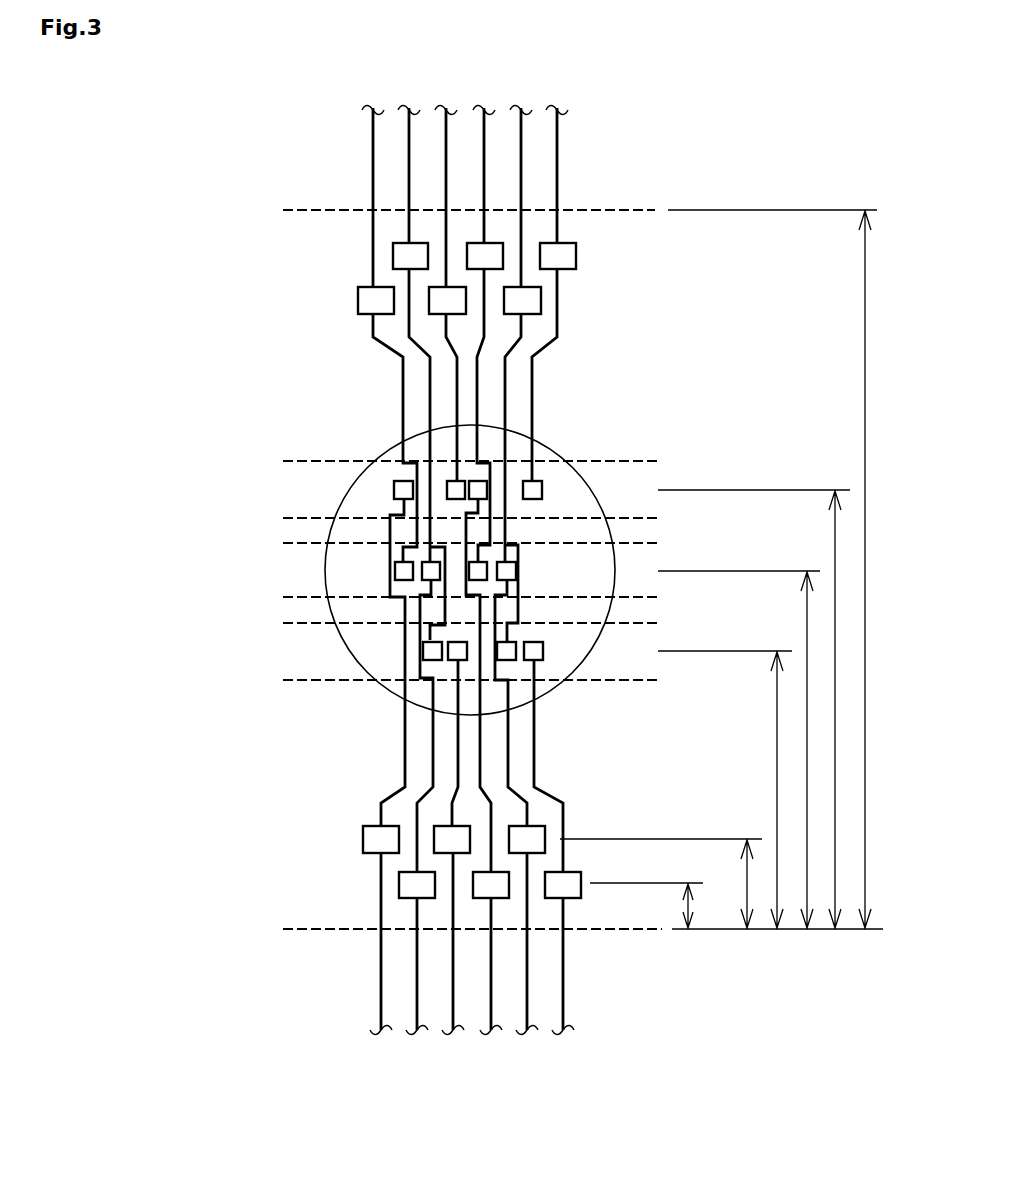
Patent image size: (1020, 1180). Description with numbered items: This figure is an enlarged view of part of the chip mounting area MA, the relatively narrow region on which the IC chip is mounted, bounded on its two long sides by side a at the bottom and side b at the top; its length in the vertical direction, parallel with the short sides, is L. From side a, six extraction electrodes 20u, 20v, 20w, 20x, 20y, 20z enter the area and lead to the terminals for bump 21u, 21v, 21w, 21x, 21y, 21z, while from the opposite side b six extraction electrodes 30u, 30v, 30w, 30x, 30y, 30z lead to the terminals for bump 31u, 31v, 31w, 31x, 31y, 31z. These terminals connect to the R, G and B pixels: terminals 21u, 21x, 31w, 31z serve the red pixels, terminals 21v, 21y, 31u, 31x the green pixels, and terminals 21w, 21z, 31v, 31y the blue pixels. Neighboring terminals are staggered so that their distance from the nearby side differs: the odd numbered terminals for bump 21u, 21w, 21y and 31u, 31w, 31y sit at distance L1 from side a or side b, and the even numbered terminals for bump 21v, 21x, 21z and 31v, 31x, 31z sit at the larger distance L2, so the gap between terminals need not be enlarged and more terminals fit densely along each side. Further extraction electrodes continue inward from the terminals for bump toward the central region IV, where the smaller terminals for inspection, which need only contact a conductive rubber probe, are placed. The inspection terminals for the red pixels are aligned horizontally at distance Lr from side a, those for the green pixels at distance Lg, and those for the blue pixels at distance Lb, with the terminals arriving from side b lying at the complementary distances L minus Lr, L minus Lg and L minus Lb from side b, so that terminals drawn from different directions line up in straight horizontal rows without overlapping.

The extraction electrode 30u is at (372, 127).
The extraction electrode 30v is at (392, 112).
The extraction electrode 30w is at (437, 113).
The extraction electrode 30x is at (483, 123).
The extraction electrode 30y is at (520, 123).
The extraction electrode 30z is at (558, 128).
The terminal for bump 31u is at (358, 300).
The terminal for bump 31v is at (393, 258).
The terminal for bump 31w is at (429, 313).
The terminal for bump 31x is at (503, 243).
The terminal for bump 31y is at (541, 303).
The terminal for bump 31z is at (576, 258).
The terminal for bump 21u is at (362, 833).
The terminal for bump 21v is at (399, 883).
The terminal for bump 21w is at (436, 822).
The terminal for bump 21x is at (508, 898).
The terminal for bump 21y is at (535, 824).
The terminal for bump 21z is at (582, 875).
The extraction electrode 20u is at (381, 1014).
The extraction electrode 20v is at (408, 1012).
The extraction electrode 20w is at (447, 1012).
The extraction electrode 20x is at (493, 1012).
The extraction electrode 20y is at (530, 1012).
The extraction electrode 20z is at (565, 1008).
The IV portion IV is at (343, 512).
The chip mounting area MA is at (648, 400).
The side a is at (310, 930).
The side b is at (637, 210).
The length of chip mounting area L is at (864, 569).
The distance Lr is at (833, 709).
The distance Lg is at (805, 750).
The distance Lb is at (775, 790).
The distance L1 is at (703, 906).
The distance L2 is at (747, 884).